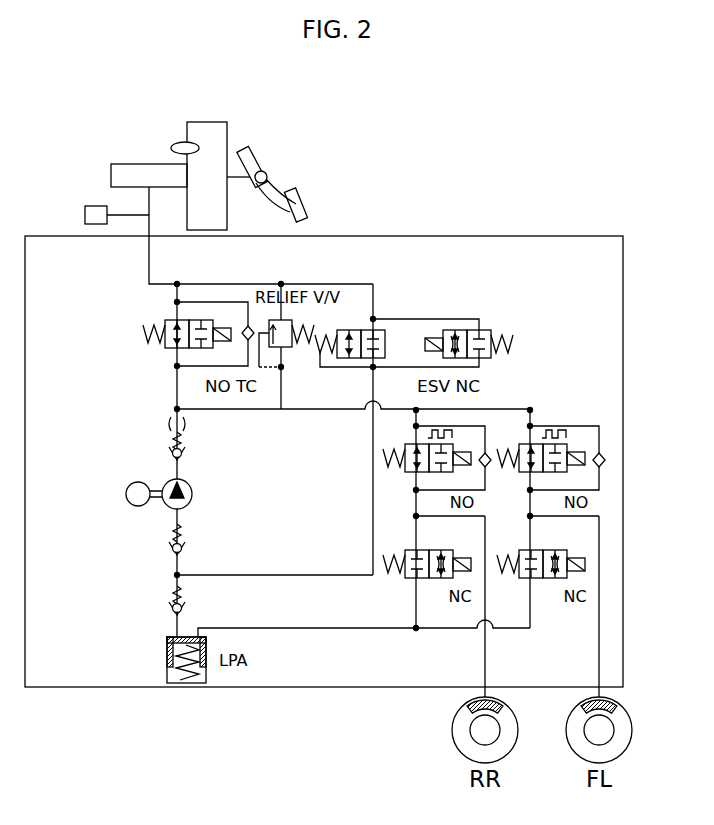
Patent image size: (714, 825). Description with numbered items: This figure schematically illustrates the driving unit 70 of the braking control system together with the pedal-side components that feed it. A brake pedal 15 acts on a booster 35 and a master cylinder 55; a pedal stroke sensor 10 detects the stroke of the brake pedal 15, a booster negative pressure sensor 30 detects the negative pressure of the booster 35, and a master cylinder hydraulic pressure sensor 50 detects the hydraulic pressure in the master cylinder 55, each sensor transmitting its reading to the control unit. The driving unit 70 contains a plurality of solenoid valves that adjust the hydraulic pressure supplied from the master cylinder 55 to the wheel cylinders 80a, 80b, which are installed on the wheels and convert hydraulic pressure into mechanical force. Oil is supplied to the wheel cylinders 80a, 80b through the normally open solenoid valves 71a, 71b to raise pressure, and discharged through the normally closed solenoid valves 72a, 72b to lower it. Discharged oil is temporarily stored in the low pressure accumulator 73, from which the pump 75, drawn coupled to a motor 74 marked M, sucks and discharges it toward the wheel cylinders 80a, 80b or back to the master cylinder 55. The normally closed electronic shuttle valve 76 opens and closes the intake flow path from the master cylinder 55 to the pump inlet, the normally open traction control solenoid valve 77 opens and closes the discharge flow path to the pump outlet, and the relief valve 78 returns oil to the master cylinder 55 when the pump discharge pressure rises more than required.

The pedal stroke sensor 10 is at (268, 174).
The brake pedal 15 is at (251, 150).
The booster negative pressure sensor 30 is at (180, 143).
The booster 35 is at (208, 122).
The master cylinder hydraulic pressure sensor 50 is at (85, 215).
The master cylinder 55 is at (113, 164).
The driving unit 70 is at (530, 236).
The normally open (NO) solenoid valve 71a is at (405, 471).
The normally open (NO) solenoid valve 71b is at (560, 440).
The normally closed (NC) solenoid valve 72a is at (405, 578).
The normally closed (NC) solenoid valve 72b is at (542, 578).
The low pressure accumulator 73 is at (167, 655).
The motor 74 is at (126, 494).
The pump 75 is at (192, 494).
The NC electronic shuttle valve 76 is at (489, 326).
The NO traction control solenoid valve 77 is at (165, 346).
The relief valve 78 is at (293, 347).
The wheel cylinder 80a is at (466, 706).
The wheel cylinder 80b is at (620, 706).